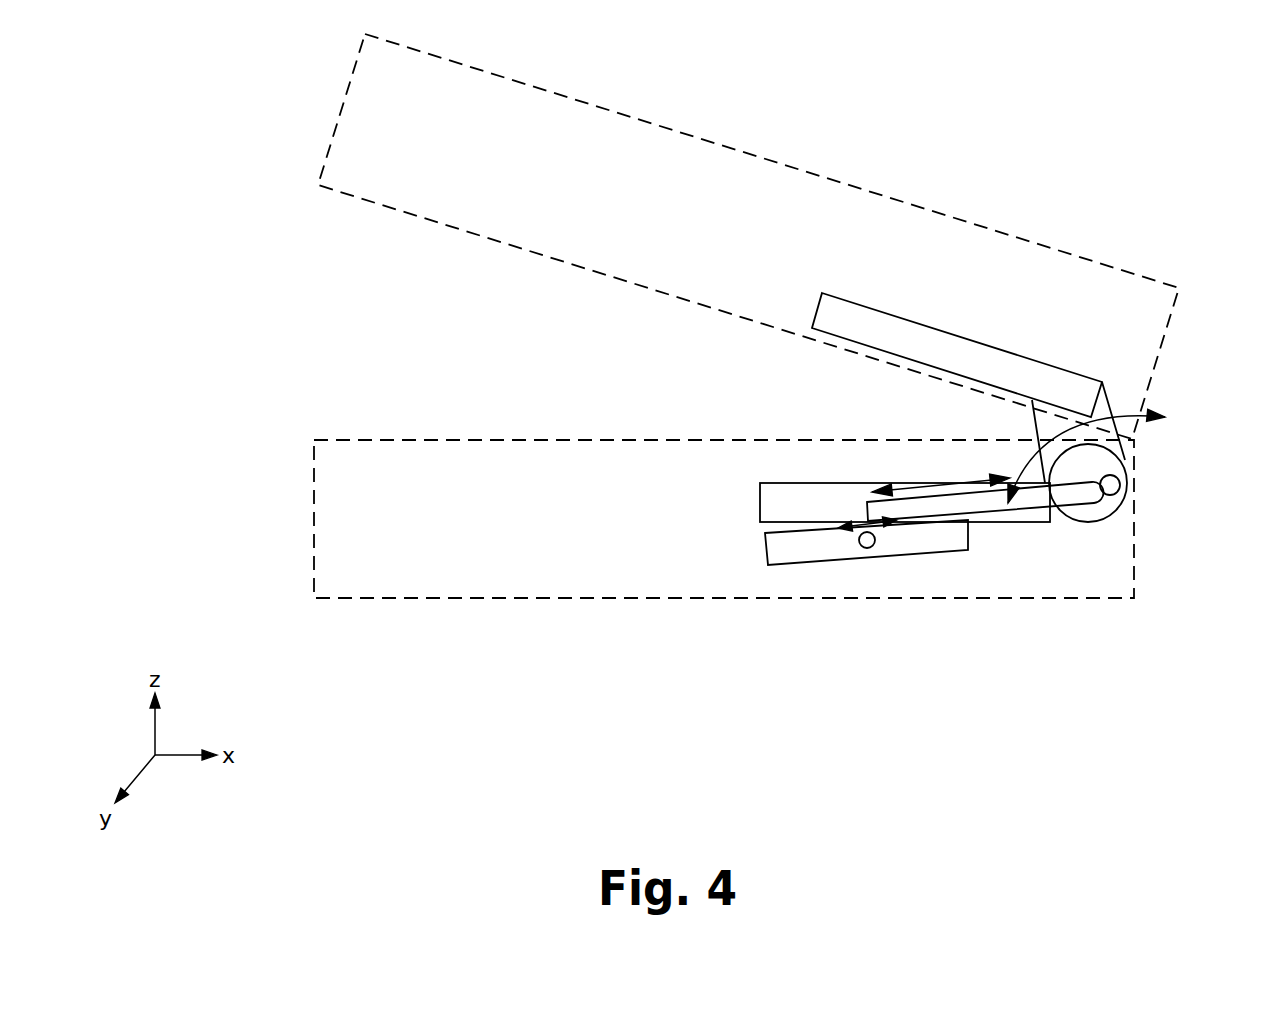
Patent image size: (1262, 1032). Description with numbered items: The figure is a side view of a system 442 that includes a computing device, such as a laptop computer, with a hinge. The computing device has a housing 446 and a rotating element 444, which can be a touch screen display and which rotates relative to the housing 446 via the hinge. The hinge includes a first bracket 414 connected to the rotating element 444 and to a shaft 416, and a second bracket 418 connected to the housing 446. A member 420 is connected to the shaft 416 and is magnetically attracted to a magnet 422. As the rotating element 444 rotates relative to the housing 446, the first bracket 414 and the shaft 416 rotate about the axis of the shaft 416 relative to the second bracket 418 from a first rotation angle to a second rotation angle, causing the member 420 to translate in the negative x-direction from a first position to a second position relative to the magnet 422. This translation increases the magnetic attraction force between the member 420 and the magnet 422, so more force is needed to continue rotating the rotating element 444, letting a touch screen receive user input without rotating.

The system 442 is at (266, 73).
The rotating element 444 is at (940, 212).
The housing 446 is at (455, 598).
The first bracket 414 is at (1060, 378).
The shaft 416 is at (1103, 468).
The second bracket 418 is at (792, 493).
The member 420 is at (1025, 520).
The magnet 422 is at (812, 552).